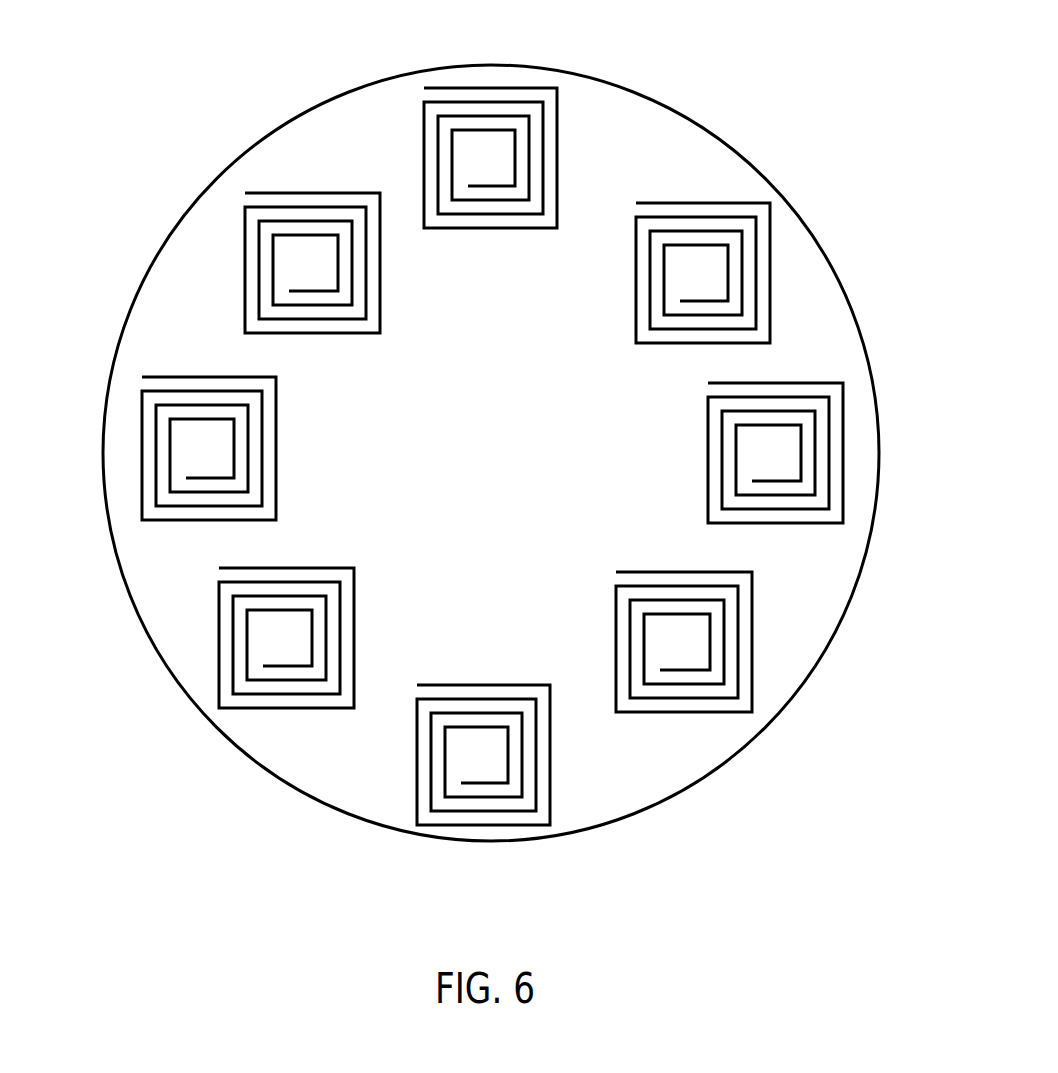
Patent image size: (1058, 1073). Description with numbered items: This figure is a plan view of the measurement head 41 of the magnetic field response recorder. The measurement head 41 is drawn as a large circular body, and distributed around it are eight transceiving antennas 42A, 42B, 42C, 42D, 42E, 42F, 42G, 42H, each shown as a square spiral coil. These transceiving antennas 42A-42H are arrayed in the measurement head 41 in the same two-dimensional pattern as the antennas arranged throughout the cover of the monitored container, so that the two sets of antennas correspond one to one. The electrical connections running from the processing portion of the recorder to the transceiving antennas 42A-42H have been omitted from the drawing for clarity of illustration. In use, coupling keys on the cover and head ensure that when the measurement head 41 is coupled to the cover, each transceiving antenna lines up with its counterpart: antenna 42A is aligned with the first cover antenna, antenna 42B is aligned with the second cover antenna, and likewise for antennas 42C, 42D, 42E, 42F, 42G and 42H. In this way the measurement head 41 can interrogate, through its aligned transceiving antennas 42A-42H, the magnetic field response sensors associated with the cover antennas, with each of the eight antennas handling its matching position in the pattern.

The measurement head 41 is at (322, 103).
The transceiving antenna 42A is at (558, 128).
The transceiving antenna 42B is at (772, 250).
The transceiving antenna 42C is at (782, 380).
The transceiving antenna 42D is at (753, 635).
The transceiving antenna 42E is at (415, 762).
The transceiving antenna 42F is at (219, 643).
The transceiving antenna 42G is at (183, 372).
The transceiving antenna 42H is at (245, 270).